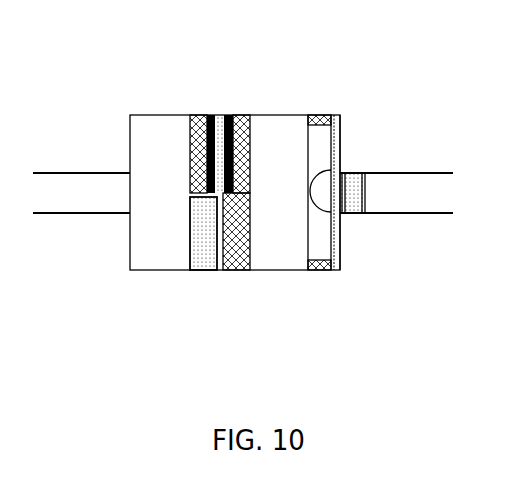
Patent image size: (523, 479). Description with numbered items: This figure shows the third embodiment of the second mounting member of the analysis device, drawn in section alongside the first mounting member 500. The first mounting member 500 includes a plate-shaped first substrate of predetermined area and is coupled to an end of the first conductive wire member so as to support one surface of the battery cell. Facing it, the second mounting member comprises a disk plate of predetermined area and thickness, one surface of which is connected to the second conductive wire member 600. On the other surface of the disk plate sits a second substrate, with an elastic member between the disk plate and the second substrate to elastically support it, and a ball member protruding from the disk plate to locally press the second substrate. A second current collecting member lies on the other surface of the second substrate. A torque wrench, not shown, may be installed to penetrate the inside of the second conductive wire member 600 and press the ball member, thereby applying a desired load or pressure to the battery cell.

The first mounting member 500 is at (130, 97).
The second conductive wire member 600 is at (420, 182).